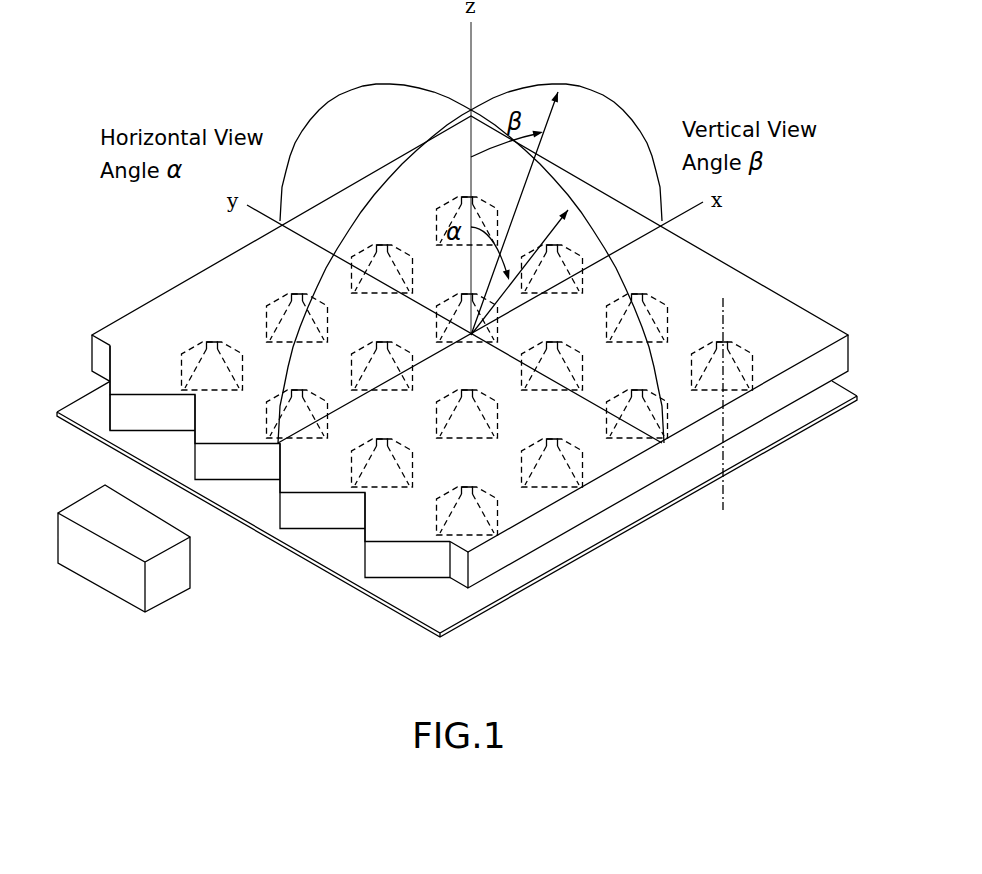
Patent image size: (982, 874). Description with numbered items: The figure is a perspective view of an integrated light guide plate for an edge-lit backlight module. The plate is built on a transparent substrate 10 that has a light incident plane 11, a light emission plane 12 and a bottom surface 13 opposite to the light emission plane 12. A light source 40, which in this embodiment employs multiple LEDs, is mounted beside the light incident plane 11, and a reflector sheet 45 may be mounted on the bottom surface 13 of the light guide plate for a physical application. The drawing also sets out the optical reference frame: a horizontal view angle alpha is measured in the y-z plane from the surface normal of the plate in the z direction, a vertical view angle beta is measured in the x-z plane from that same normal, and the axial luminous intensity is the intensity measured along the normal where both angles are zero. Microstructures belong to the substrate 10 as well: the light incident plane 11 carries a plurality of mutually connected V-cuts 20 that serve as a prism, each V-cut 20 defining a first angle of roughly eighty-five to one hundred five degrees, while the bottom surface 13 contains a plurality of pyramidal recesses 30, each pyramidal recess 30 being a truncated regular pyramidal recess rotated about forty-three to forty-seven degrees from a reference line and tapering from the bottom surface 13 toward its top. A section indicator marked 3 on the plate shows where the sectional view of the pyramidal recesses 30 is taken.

The transparent substrate 10 is at (454, 369).
The light incident plane 11 is at (101, 364).
The light emission plane 12 is at (697, 263).
The bottom surface 13 is at (797, 400).
The V-cut 20 is at (300, 522).
The pyramidal recess 30 is at (552, 470).
The light source 40 is at (168, 575).
The reflector sheet 45 is at (450, 605).
The section line for FIG. 3 is at (730, 496).